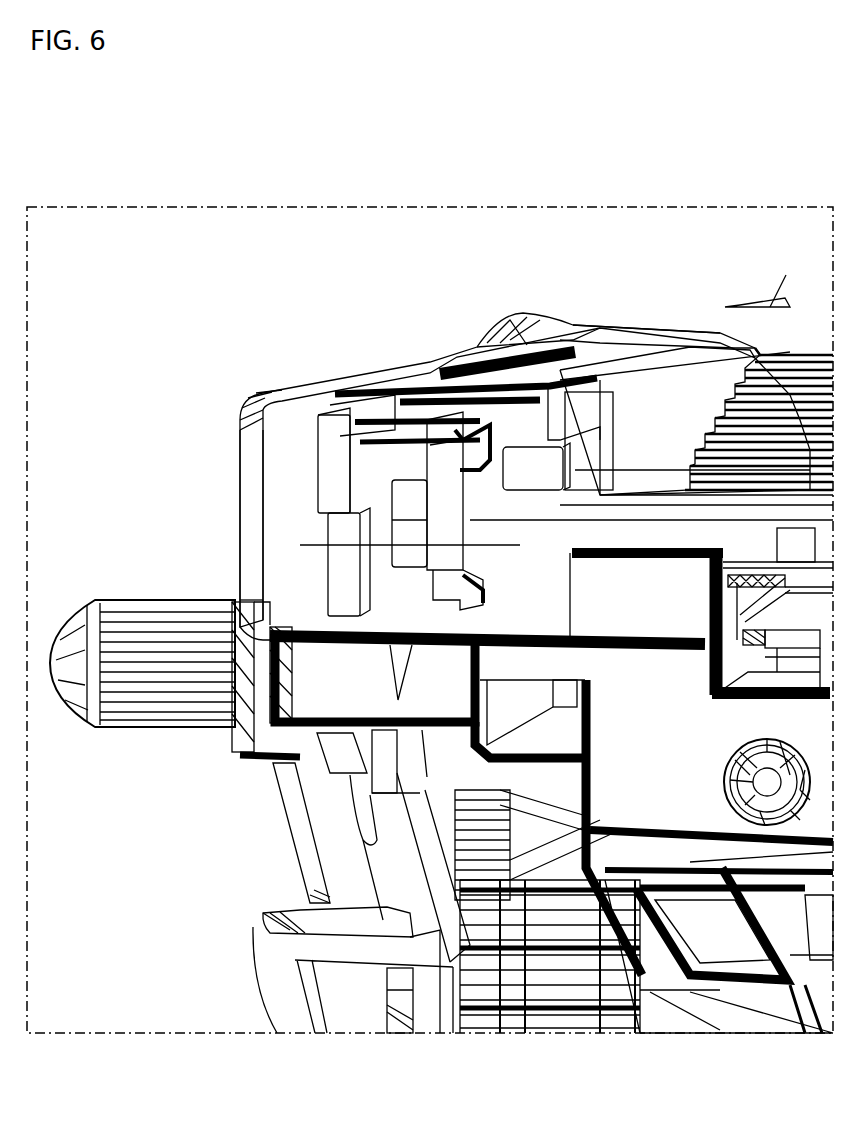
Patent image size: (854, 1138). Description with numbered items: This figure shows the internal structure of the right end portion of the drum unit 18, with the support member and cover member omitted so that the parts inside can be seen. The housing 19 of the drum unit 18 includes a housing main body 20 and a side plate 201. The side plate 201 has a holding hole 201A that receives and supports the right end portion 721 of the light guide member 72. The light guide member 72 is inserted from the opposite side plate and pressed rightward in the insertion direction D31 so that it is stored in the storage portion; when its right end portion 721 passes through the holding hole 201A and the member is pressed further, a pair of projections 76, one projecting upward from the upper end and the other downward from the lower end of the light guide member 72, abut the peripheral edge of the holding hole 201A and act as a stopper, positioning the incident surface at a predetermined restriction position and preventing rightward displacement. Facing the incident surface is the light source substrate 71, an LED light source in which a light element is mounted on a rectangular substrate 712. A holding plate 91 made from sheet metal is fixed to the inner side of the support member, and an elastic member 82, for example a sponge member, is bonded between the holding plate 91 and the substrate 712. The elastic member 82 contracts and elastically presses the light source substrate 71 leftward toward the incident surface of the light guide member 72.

The drum unit 18 is at (190, 338).
The housing 19 is at (600, 295).
The housing main body 20 is at (680, 790).
The light source substrate 71 is at (315, 443).
The substrate 712 is at (337, 453).
The light guide member 72 is at (645, 490).
The right end portion 721 is at (395, 473).
The projections 76 is at (525, 445).
The elastic member 82 is at (288, 505).
The holding plate 91 is at (320, 380).
The side plate 201 is at (440, 470).
The holding hole 201A is at (300, 545).
The insertion direction D31 is at (774, 276).